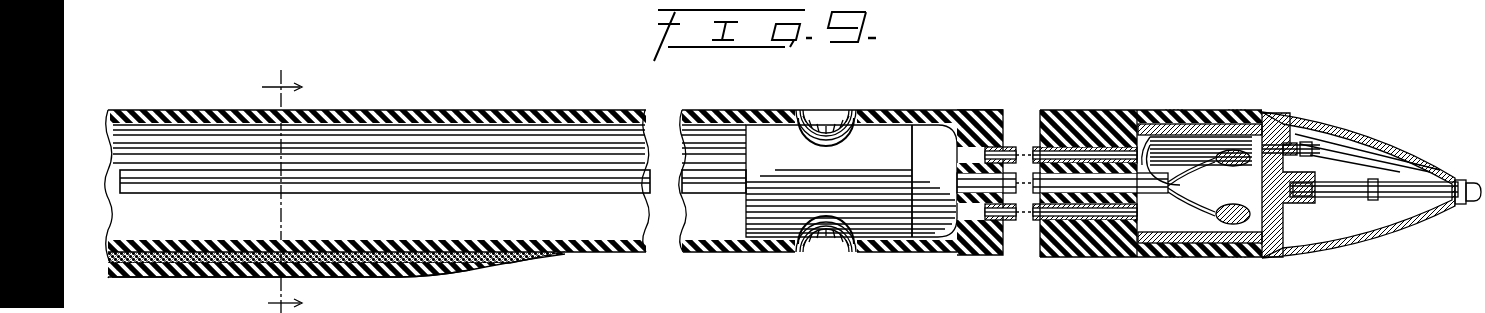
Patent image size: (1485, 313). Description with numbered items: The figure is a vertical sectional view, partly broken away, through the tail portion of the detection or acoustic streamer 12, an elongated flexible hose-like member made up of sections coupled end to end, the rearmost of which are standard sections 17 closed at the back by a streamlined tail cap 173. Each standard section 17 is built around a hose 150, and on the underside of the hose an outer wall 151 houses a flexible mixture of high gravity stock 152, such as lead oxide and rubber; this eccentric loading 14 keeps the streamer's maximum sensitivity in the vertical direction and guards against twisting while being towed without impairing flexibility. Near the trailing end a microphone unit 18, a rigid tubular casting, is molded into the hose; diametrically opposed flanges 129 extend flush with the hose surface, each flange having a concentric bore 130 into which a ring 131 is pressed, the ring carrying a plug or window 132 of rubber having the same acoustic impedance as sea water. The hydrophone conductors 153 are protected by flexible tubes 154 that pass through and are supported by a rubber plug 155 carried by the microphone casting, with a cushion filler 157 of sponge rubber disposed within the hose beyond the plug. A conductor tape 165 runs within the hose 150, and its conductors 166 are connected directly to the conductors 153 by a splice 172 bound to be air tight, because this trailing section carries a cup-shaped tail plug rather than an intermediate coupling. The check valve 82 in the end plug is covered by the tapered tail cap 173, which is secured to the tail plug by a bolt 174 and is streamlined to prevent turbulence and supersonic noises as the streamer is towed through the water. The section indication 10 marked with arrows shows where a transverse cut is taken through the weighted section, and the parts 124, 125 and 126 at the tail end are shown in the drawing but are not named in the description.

The section line 10 is at (285, 189).
The detection streamer 12 is at (677, 115).
The eccentric loading 14 is at (438, 272).
The standard section 17 is at (622, 253).
The microphone unit 18 is at (851, 181).
The check valve 82 is at (1297, 148).
The liner 124 is at (1146, 124).
The cup 125 is at (1193, 262).
The shell 126 is at (1192, 112).
The flange 129 is at (801, 120).
The bore 130 is at (851, 121).
The ring 131 is at (811, 110).
The plug or window 132 is at (838, 116).
The hose 150 is at (560, 255).
The outer wall 151 is at (168, 278).
The high gravity stock 152 is at (120, 272).
The conductors 153 is at (1032, 153).
The flexible tubes 154 is at (986, 111).
The rubber plug 155 is at (932, 140).
The cushion filler 157 is at (1086, 125).
The conductor tape 165 is at (386, 193).
The conductors 166 is at (1195, 179).
The splice 172 is at (1240, 168).
The tail cap 173 is at (1404, 148).
The bolt 174 is at (1366, 199).